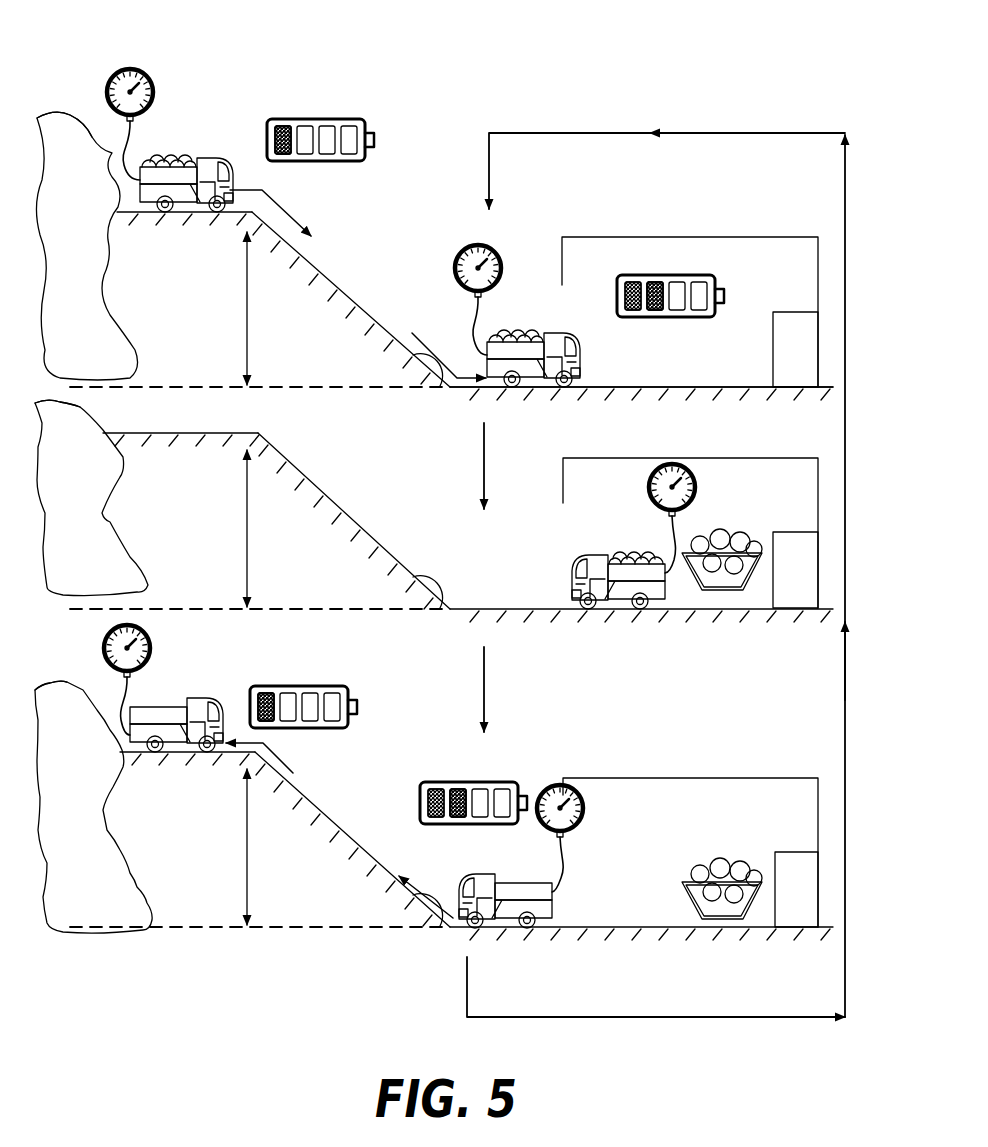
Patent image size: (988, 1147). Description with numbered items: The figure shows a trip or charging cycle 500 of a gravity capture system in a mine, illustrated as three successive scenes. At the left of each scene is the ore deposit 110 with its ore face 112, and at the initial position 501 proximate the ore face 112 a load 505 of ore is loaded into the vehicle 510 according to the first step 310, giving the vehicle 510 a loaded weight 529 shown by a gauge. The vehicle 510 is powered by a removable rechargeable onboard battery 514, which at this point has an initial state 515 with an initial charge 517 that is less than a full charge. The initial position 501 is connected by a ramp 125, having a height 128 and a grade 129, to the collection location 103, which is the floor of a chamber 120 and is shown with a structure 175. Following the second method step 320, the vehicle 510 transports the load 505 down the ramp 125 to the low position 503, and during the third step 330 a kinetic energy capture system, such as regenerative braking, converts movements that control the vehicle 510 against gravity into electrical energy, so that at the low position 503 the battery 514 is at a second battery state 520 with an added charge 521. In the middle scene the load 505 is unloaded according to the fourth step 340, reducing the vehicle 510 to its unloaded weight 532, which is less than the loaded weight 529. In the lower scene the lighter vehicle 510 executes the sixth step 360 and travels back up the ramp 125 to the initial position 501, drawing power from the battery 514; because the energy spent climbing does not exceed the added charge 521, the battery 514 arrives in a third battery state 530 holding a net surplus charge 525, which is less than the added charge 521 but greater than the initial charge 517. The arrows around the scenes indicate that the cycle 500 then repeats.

The mining material handling method 500 is at (542, 82).
The ore deposit 110 is at (140, 338).
The ore face 112 is at (80, 115).
The chamber 120 is at (592, 257).
The ramp 125 is at (357, 307).
The height 128 is at (248, 333).
The grade 129 is at (422, 367).
The collection location 103 is at (670, 387).
The charging station / building 175 is at (797, 350).
The first step 310 is at (222, 128).
The second method step 320 is at (392, 243).
The third step 330 is at (513, 298).
The fourth step 340 is at (565, 535).
The sixth step 360 is at (340, 760).
The initial position 501 is at (182, 230).
The low position 503 is at (537, 395).
The load 505 is at (180, 155).
The vehicle 510 is at (185, 190).
The rechargeable onboard battery 514 is at (217, 202).
The initial state 515 is at (325, 163).
The initial charge 517 is at (283, 163).
The second battery state 520 is at (725, 295).
The added charge 521 is at (653, 273).
The surplus charge 525 is at (280, 729).
The loaded weight 529 is at (133, 67).
The third battery state 530 is at (330, 685).
The unloaded weight 532 is at (697, 487).